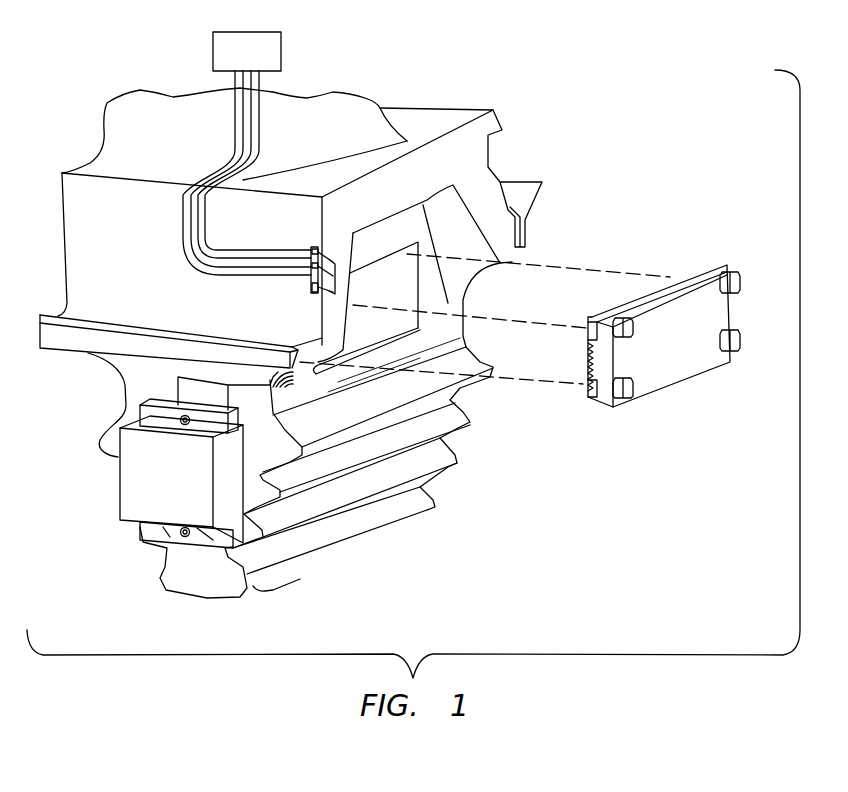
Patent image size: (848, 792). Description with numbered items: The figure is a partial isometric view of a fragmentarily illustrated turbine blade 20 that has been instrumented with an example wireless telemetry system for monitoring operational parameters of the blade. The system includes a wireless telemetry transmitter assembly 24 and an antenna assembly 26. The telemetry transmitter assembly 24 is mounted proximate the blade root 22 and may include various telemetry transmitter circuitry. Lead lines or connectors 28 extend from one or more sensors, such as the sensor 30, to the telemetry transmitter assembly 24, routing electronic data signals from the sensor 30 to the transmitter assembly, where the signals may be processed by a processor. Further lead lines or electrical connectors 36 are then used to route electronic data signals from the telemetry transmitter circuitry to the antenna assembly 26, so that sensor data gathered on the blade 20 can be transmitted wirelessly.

The turbine blade 20 is at (347, 120).
The blade root 22 is at (347, 549).
The wireless telemetry transmitter assembly 24 is at (593, 423).
The antenna assembly 26 is at (240, 495).
The lead lines 28 is at (262, 270).
The sensor 30 is at (283, 48).
The electrical connectors 36 is at (223, 401).